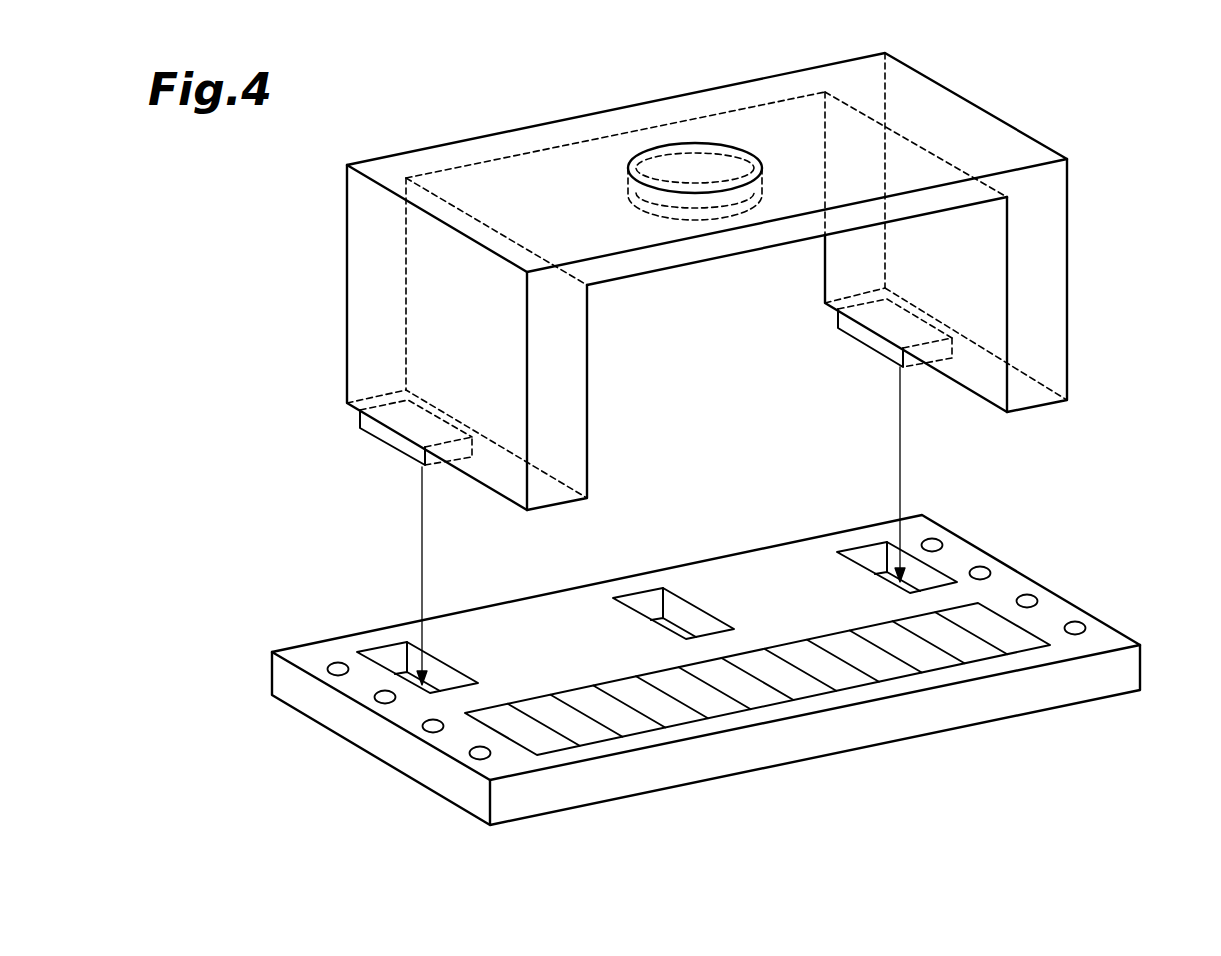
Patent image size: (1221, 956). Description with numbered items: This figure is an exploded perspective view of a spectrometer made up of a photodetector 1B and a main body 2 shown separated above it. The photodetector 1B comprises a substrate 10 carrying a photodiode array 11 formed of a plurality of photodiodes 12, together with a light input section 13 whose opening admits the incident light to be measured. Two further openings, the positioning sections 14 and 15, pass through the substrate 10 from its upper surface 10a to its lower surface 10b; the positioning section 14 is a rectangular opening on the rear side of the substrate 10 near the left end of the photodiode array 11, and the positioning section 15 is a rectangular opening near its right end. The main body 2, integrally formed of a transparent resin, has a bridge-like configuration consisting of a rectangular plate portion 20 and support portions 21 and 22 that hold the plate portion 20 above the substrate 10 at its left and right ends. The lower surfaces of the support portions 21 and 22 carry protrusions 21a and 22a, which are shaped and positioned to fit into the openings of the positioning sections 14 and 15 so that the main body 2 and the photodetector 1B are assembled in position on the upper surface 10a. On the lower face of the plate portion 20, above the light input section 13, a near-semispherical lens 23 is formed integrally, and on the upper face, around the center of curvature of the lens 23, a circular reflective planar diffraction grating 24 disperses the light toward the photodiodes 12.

The main body 2 is at (487, 130).
The plate portion 20 is at (738, 125).
The support portion 21 is at (372, 279).
The support portion 22 is at (1047, 262).
The protrusion 21a is at (393, 440).
The protrusion 22a is at (865, 337).
The lens 23 is at (643, 210).
The planar diffraction grating 24 is at (647, 150).
The photodetector 1B is at (693, 793).
The substrate 10 is at (745, 552).
The upper surface 10a is at (523, 617).
The lower surface 10b is at (557, 813).
The photodiode array 11 is at (893, 679).
The photodiode 12 is at (798, 684).
The light input section 13 is at (648, 606).
The positioning section 14 is at (393, 657).
The positioning section 15 is at (872, 556).